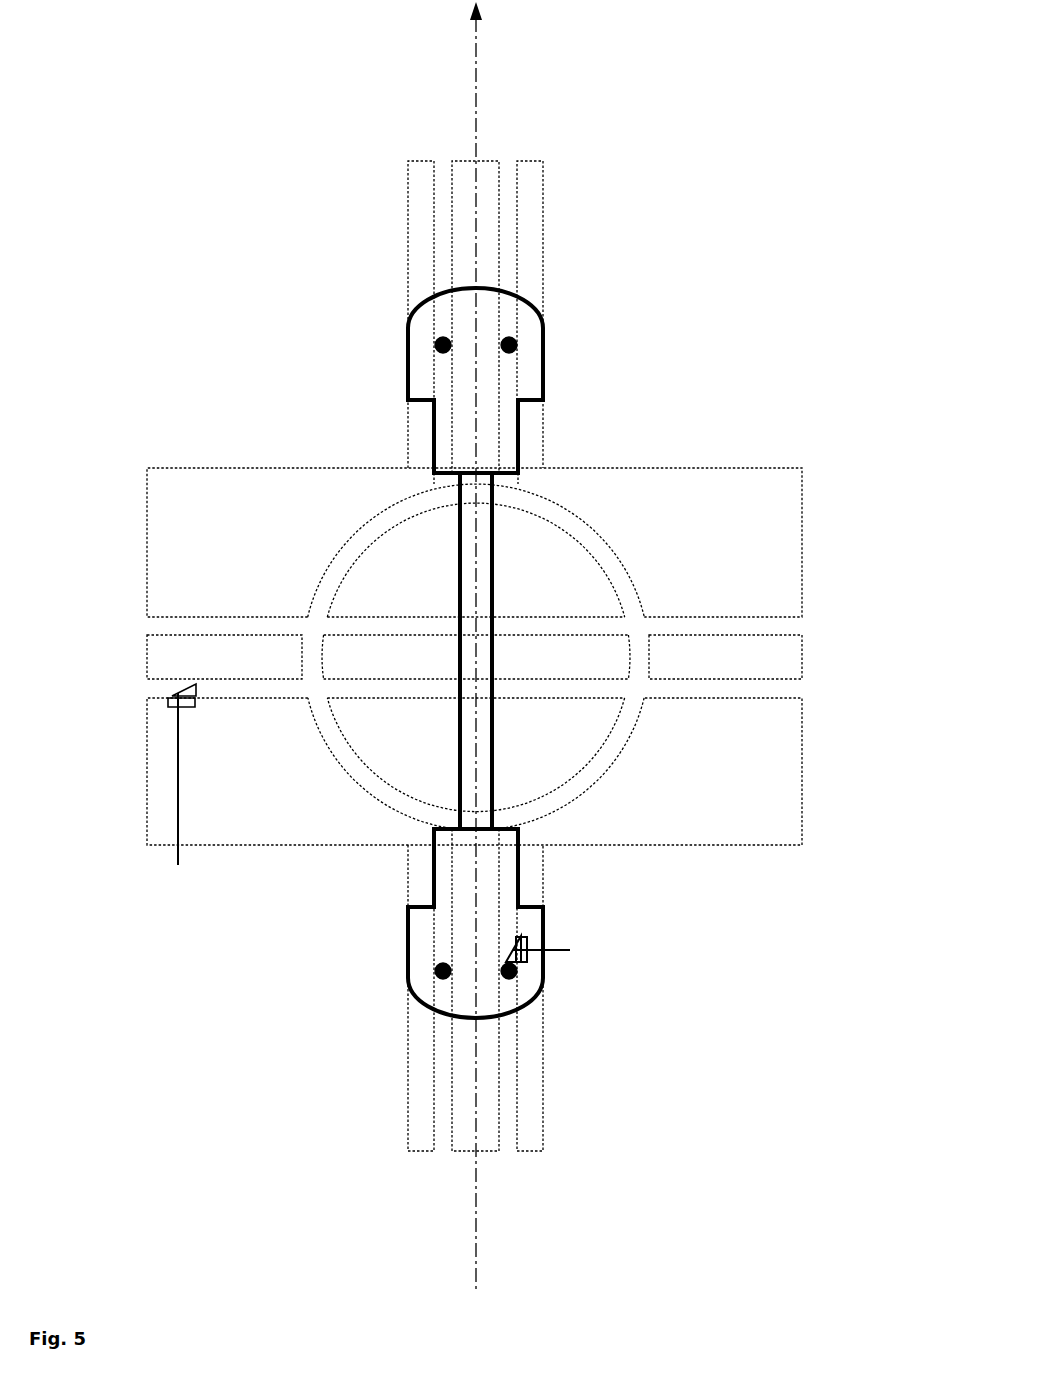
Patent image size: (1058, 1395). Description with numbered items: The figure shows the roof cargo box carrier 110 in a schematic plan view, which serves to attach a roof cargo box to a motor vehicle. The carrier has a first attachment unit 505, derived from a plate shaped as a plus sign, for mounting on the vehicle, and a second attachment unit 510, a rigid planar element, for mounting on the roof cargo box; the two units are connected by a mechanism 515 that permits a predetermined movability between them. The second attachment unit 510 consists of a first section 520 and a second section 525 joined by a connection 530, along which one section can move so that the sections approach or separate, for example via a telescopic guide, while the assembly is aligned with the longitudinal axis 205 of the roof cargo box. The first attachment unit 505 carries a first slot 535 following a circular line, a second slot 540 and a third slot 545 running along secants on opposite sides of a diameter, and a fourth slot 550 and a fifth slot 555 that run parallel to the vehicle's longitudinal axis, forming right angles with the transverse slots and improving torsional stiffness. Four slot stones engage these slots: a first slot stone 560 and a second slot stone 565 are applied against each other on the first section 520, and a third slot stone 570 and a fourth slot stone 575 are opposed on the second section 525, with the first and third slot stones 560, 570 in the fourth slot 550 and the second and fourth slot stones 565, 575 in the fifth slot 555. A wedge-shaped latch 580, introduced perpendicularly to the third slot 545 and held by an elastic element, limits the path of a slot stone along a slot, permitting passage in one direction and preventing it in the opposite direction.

The roof cargo box carrier 110 is at (793, 86).
The longitudinal axis 205 is at (478, 28).
The first attachment unit 505 is at (712, 468).
The second attachment unit 510 is at (574, 305).
The mechanism 515 is at (250, 328).
The first section 520 is at (408, 385).
The second section 525 is at (408, 927).
The connection 530 is at (462, 530).
The first slot 535 is at (600, 508).
The second slot 540 is at (818, 624).
The third slot 545 is at (818, 688).
The fourth slot 550 is at (443, 148).
The fifth slot 555 is at (506, 148).
The first slot stone 560 is at (434, 345).
The second slot stone 565 is at (518, 348).
The third slot stone 570 is at (435, 972).
The fourth slot stone 575 is at (517, 973).
The latch 580 is at (178, 731).